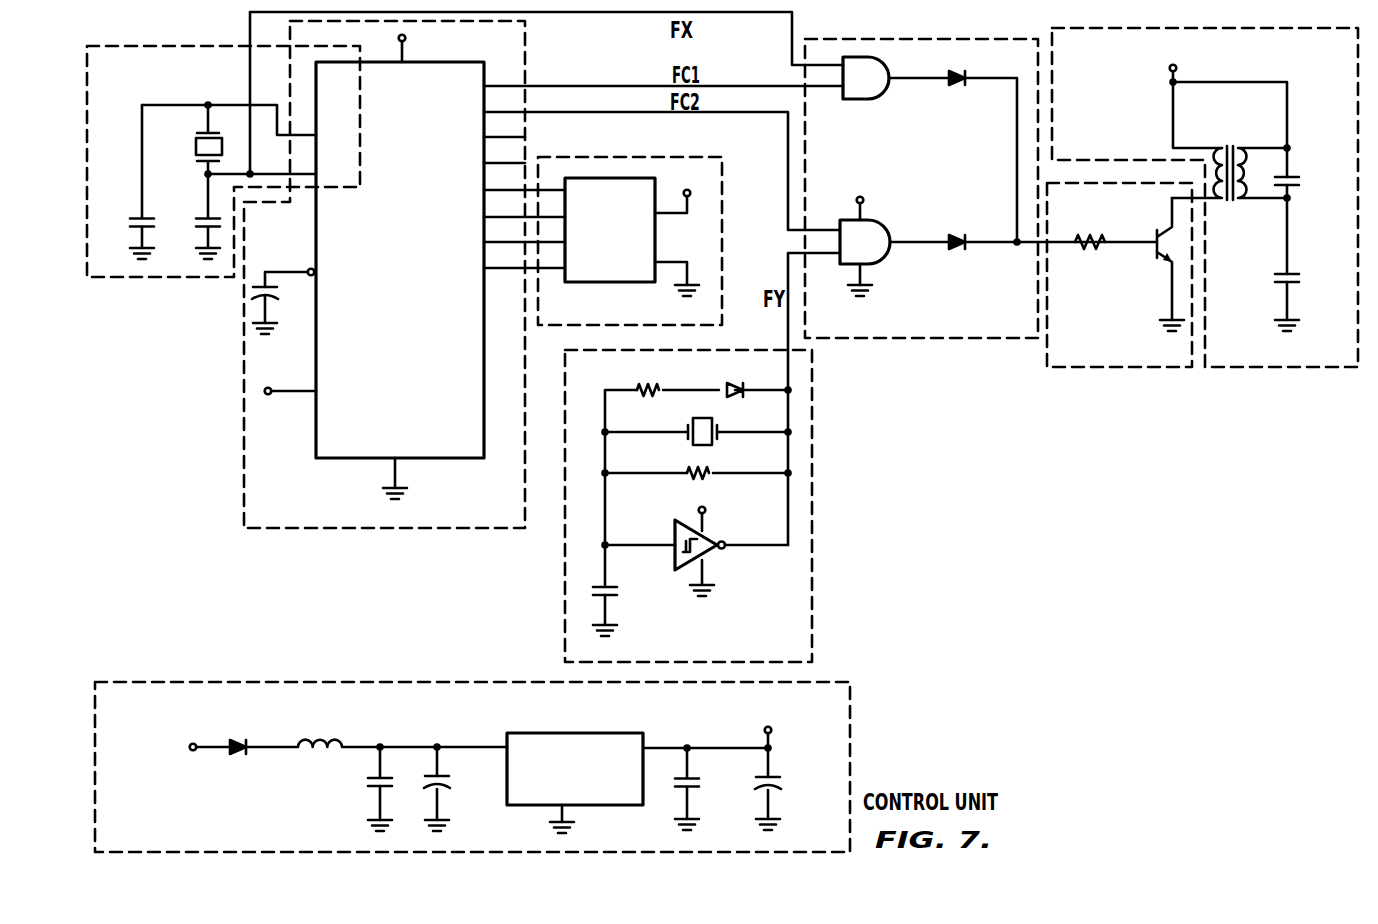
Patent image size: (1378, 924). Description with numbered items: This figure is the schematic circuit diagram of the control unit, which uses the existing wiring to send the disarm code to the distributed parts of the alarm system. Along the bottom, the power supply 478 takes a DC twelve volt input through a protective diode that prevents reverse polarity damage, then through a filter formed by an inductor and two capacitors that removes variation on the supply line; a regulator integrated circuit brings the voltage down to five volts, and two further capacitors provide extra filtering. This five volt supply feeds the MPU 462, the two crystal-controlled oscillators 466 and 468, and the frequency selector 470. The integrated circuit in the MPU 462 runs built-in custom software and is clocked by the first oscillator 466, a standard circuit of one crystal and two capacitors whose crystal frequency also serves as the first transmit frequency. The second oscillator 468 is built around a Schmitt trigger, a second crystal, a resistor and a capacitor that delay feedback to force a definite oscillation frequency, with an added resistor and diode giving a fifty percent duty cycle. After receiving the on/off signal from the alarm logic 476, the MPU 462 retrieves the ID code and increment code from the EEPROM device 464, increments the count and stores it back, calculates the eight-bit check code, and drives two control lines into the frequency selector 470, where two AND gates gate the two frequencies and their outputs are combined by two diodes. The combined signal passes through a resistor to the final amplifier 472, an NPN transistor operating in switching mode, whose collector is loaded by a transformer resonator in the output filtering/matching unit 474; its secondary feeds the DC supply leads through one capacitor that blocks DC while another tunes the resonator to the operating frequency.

The MPU 462 is at (525, 31).
The EEPROM device 464 is at (740, 322).
The first oscillator 466 is at (157, 47).
The second oscillator 468 is at (812, 652).
The frequency selector 470 is at (953, 39).
The final amplifier 472 is at (1079, 368).
The output filtering/matching unit 474 is at (1052, 30).
The alarm logic 476 is at (140, 363).
The power supply 478 is at (237, 682).